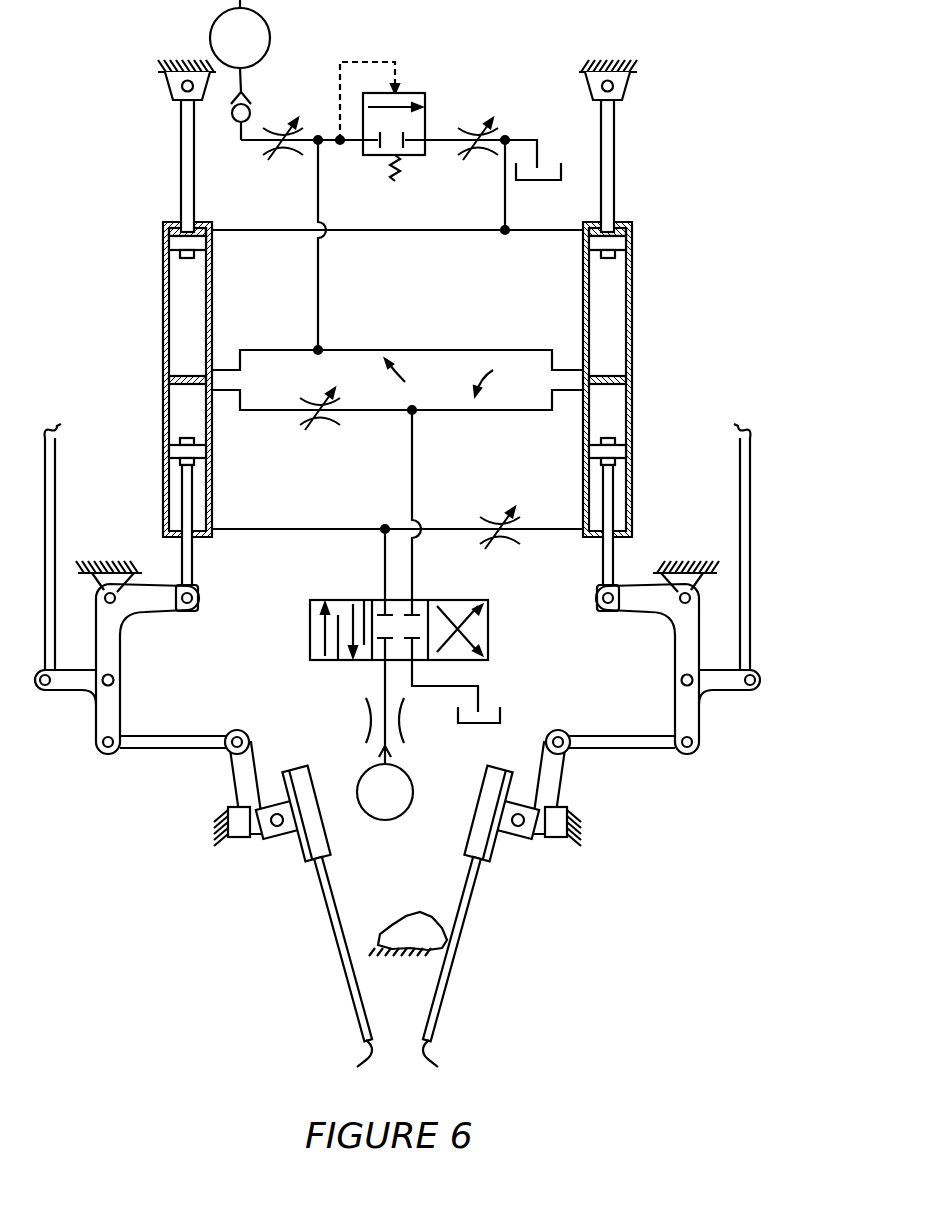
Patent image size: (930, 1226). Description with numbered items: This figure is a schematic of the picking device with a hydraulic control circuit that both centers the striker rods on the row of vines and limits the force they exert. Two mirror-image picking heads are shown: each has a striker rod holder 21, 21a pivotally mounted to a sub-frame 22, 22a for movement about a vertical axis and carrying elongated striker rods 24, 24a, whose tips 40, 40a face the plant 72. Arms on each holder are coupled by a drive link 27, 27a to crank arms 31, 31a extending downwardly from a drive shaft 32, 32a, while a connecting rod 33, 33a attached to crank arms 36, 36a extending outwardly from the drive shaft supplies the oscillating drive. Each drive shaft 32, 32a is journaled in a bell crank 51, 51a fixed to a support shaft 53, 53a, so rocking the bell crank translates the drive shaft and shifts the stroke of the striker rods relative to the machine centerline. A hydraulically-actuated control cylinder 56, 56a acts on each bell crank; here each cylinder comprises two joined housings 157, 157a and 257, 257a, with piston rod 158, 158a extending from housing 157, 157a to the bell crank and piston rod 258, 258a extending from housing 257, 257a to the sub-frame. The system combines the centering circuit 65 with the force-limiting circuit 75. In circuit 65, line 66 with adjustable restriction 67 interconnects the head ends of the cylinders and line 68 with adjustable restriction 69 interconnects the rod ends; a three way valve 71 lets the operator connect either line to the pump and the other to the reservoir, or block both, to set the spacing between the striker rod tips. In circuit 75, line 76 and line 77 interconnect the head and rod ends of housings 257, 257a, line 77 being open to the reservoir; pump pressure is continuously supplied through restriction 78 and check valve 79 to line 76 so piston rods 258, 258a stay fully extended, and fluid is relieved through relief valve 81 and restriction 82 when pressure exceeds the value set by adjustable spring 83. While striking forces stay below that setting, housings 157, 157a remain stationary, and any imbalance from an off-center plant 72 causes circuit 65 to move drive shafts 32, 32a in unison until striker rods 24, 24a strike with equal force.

The striker rod holder 21 is at (514, 832).
The striker rod holder 21a is at (268, 838).
The sub-frame 22 is at (622, 83).
The sub-frame 22a is at (163, 78).
The striker rods 24 is at (442, 962).
The striker rods 24a is at (342, 962).
The drive link 27 is at (597, 749).
The drive link 27a is at (170, 749).
The crank arms 31 is at (676, 722).
The crank arms 31a is at (118, 722).
The drive shaft 32 is at (680, 680).
The drive shaft 32a is at (116, 680).
The connecting rod 33 is at (748, 484).
The connecting rod 33a is at (56, 488).
The crank arms 36 is at (722, 690).
The crank arms 36a is at (70, 690).
The arm tip 40 is at (438, 1071).
The arm tip 40a is at (348, 1071).
The bell crank 51 is at (668, 605).
The bell crank 51a is at (122, 622).
The support shaft 53 is at (680, 590).
The support shaft 53a is at (108, 590).
The hydraulically-actuated control cylinder 56 is at (655, 332).
The hydraulically-actuated control cylinder 56a is at (158, 340).
The hydraulic control circuit 65 is at (502, 374).
The line 66 is at (478, 412).
The adjustable restriction 67 is at (325, 428).
The line 68 is at (318, 527).
The adjustable restriction 69 is at (502, 517).
The three way valve 71 is at (488, 632).
The plant 72 is at (404, 926).
The hydraulic control circuit 75 is at (415, 380).
The line 76 is at (478, 348).
The line 77 is at (370, 235).
The restriction 78 is at (279, 156).
The check valve 79 is at (252, 102).
The relief valve 81 is at (412, 93).
The restriction 82 is at (488, 132).
The adjustable spring 83 is at (396, 170).
The cylinder housing 157 is at (634, 420).
The cylinder housing 157a is at (163, 430).
The piston rod 158 is at (602, 570).
The piston rod 158a is at (194, 558).
The cylinder housing 257 is at (634, 268).
The cylinder housing 257a is at (163, 258).
The piston rod 258 is at (612, 170).
The piston rod 258a is at (181, 153).